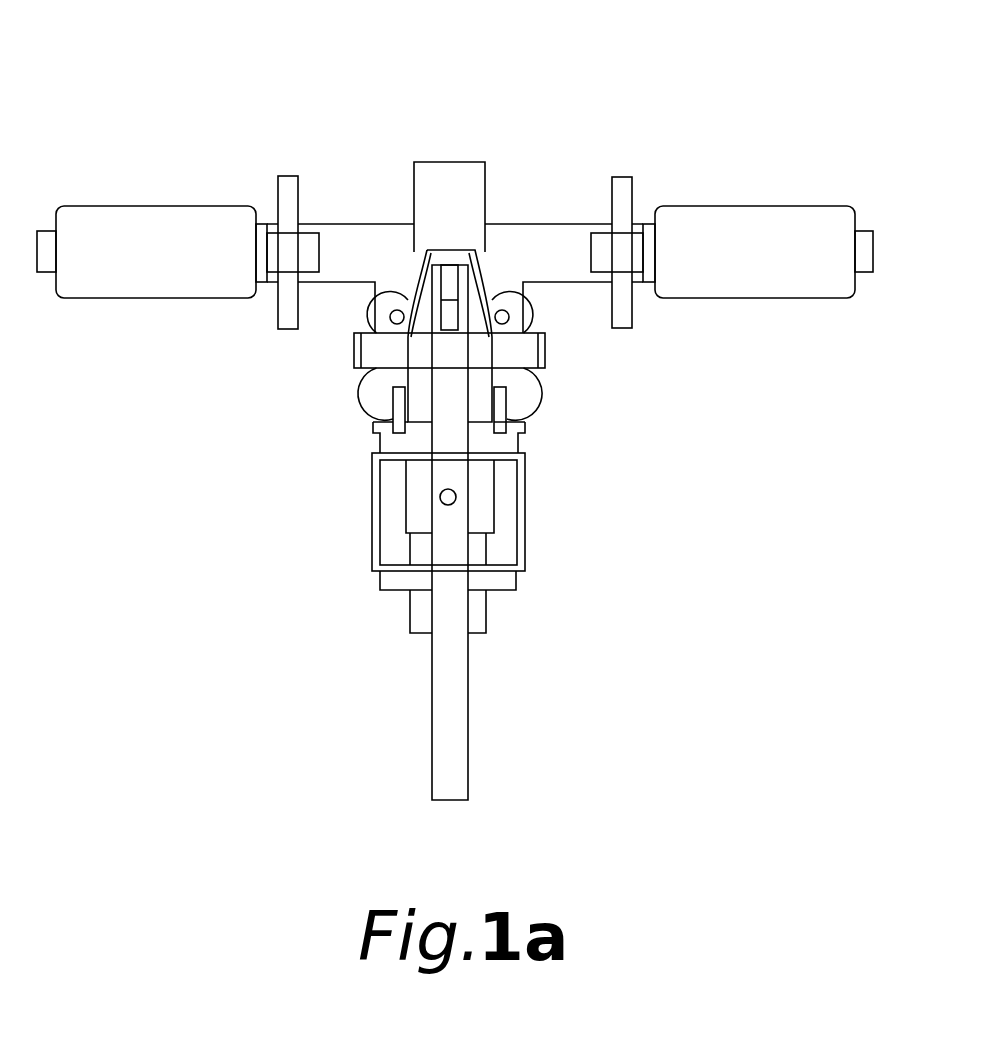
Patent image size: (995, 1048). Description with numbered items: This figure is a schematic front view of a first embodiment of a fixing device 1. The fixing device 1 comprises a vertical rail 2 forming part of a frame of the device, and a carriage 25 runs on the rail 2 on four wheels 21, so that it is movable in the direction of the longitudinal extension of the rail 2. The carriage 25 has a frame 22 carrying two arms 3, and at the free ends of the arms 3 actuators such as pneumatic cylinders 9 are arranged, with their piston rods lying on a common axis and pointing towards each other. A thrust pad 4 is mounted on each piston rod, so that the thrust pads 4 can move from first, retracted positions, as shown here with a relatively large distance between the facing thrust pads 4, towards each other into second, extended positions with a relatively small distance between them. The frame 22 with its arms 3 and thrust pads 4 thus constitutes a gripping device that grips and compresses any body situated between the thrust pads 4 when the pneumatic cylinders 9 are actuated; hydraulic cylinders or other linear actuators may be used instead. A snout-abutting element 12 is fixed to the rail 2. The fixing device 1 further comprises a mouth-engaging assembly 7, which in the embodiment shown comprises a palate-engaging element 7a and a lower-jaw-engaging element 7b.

The fixing device 1 is at (455, 407).
The vertical rail 2 is at (457, 190).
The arms 3 is at (353, 247).
The thrust pad 4 is at (293, 183).
The mouth-engaging assembly 7 is at (473, 238).
The palate-engaging element 7a is at (422, 320).
The lower-jaw-engaging element 7b is at (448, 373).
The pneumatic cylinders 9 is at (157, 272).
The snout-abutting element 12 is at (517, 352).
The wheels 21 is at (392, 314).
The frame 22 is at (376, 421).
The carriage 25 is at (330, 208).